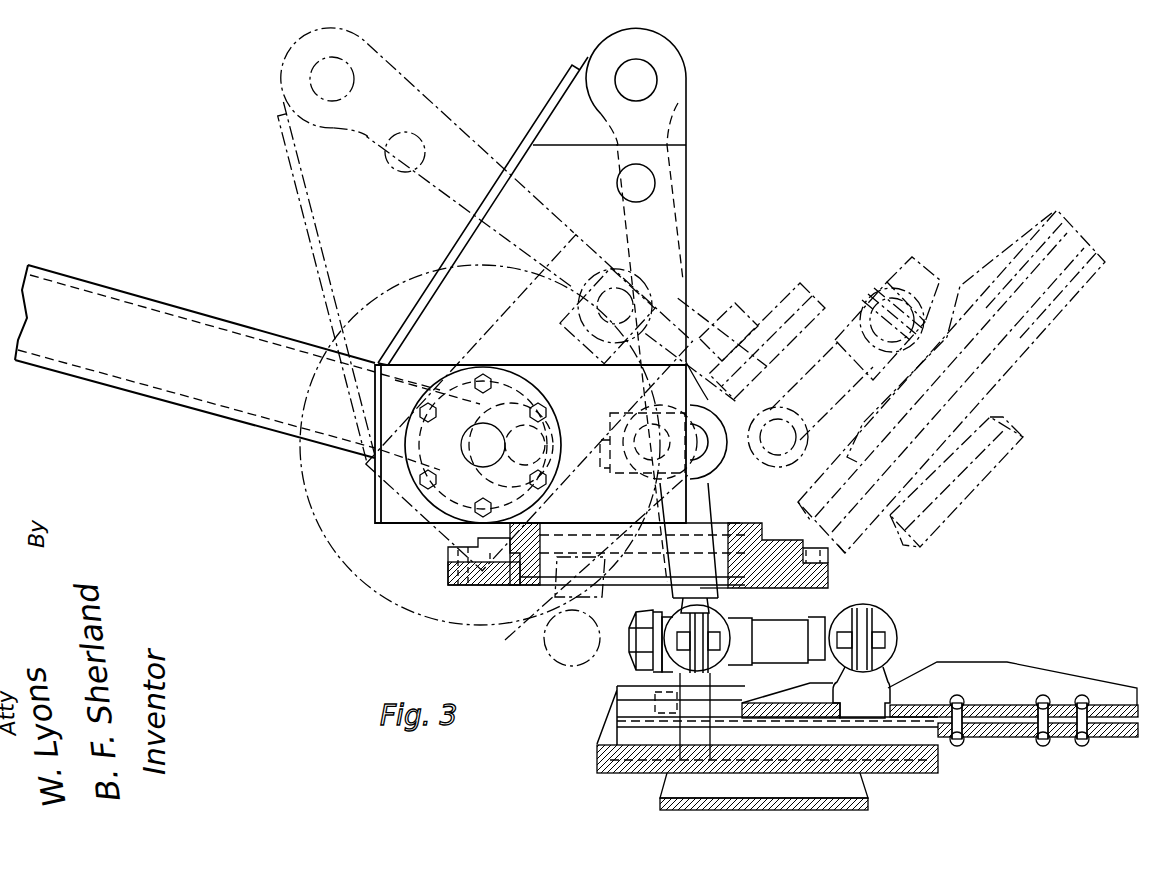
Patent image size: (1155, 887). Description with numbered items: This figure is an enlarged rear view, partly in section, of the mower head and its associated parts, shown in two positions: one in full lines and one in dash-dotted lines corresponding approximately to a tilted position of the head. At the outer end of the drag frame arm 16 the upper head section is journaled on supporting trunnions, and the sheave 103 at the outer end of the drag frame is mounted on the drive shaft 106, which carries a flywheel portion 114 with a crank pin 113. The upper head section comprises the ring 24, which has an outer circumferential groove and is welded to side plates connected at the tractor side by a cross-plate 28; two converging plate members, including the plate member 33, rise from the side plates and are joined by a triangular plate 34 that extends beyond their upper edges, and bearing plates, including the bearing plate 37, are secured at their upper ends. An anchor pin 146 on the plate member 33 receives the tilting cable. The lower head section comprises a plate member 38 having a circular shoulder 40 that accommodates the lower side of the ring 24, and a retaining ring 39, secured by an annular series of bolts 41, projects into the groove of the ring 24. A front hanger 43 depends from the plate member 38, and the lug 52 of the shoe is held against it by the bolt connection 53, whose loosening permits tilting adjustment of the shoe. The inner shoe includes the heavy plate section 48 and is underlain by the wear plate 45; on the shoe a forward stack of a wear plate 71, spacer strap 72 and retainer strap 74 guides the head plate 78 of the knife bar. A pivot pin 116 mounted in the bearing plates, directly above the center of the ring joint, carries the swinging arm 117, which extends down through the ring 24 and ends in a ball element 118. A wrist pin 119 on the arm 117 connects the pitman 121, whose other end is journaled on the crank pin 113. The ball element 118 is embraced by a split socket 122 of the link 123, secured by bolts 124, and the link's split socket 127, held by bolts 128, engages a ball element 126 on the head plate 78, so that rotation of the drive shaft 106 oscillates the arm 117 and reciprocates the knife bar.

The drag frame arm 16 is at (212, 418).
The ring 24 is at (540, 552).
The cross-plate 28 is at (374, 515).
The plate member 33 is at (686, 280).
The triangular plate 34 is at (528, 143).
The bearing plate 37 is at (687, 75).
The plate member 38 is at (444, 572).
The retaining ring 39 is at (766, 538).
The circular shoulder 40 is at (500, 586).
The bolts 41 is at (456, 586).
The front hanger 43 is at (660, 686).
The wear plate 45 is at (868, 803).
The heavy plate section 48 is at (936, 773).
The lug 52 is at (706, 678).
The bolt connection 53 is at (640, 648).
The wear plate 71 is at (832, 724).
The spacer strap 72 is at (620, 708).
The retainer strap 74 is at (618, 694).
The head plate 78 is at (930, 705).
The sheave 103 is at (306, 490).
The drive shaft 106 is at (470, 452).
The crank pin 113 is at (524, 428).
The flywheel portion 114 is at (528, 498).
The pivot pin 116 is at (636, 60).
The arm 117 is at (630, 240).
The ball element 118 is at (556, 655).
The wrist pin 119 is at (702, 470).
The pitman 121 is at (562, 332).
The socket 122 is at (660, 603).
The link 123 is at (790, 658).
The bolts 124 is at (716, 640).
The ball element 126 is at (870, 620).
The split socket 127 is at (893, 612).
The bolts 128 is at (884, 638).
The anchor pin 146 is at (618, 182).